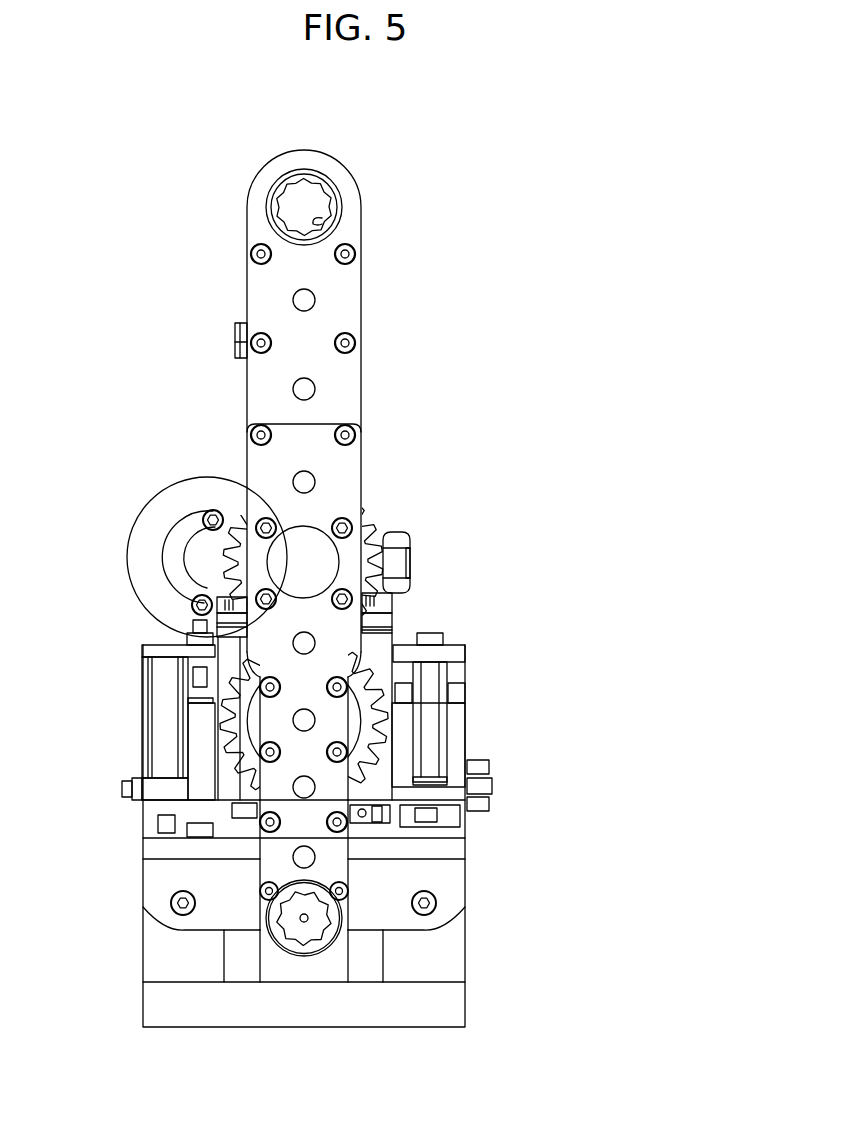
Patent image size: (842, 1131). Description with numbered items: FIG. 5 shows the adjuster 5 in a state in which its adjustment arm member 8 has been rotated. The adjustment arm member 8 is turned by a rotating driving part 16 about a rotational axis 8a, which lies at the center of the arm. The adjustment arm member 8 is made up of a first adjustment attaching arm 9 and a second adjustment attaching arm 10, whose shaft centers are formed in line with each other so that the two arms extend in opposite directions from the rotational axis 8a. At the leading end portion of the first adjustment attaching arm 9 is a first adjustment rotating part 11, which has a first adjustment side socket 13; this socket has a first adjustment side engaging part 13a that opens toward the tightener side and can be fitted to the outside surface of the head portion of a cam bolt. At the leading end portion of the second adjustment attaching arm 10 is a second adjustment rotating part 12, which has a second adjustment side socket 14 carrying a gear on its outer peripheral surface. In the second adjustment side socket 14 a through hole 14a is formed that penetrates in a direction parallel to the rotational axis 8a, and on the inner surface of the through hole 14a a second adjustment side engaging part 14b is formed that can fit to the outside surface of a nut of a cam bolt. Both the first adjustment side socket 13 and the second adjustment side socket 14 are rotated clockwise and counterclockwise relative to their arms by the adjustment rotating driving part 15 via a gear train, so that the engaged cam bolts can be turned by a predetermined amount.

The adjuster 5 is at (373, 384).
The adjustment arm member 8 is at (377, 460).
The rotational axis 8a is at (323, 563).
The first adjustment attaching arm 9 is at (322, 788).
The second adjustment attaching arm 10 is at (265, 313).
The first adjustment rotating part 11 is at (311, 957).
The second adjustment rotating part 12 is at (337, 187).
The first adjustment side socket 13 is at (333, 912).
The first adjustment side engaging part 13a is at (292, 928).
The second adjustment side socket 14 is at (308, 180).
The through hole 14a is at (302, 206).
The second adjustment side engaging part 14b is at (322, 218).
The adjustment rotating driving part 15 is at (148, 558).
The rotating driving part 16 is at (365, 708).